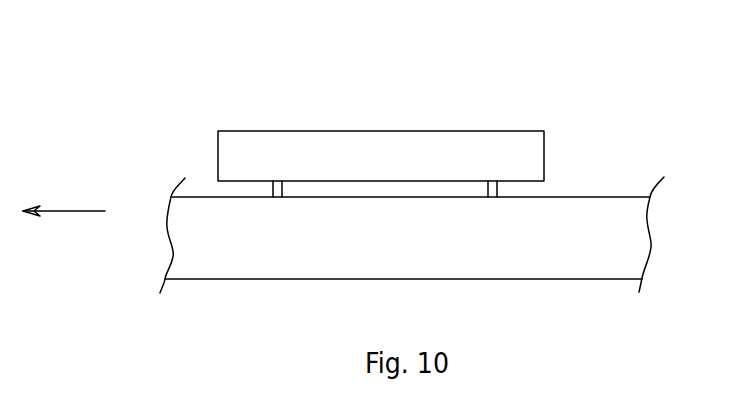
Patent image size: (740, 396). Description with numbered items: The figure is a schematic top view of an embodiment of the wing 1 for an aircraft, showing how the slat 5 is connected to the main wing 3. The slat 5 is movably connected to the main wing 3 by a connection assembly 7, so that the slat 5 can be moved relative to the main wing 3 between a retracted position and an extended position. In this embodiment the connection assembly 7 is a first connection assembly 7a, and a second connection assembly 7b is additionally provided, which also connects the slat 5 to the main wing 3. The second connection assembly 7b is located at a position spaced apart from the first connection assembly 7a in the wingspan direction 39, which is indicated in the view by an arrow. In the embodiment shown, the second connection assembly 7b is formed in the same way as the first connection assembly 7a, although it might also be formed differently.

The wing 1 is at (621, 108).
The main wing 3 is at (401, 258).
The slat 5 is at (401, 168).
The connection assembly 7 is at (384, 170).
The first connection assembly 7a is at (272, 187).
The second connection assembly 7b is at (498, 190).
The wingspan direction 39 is at (75, 212).